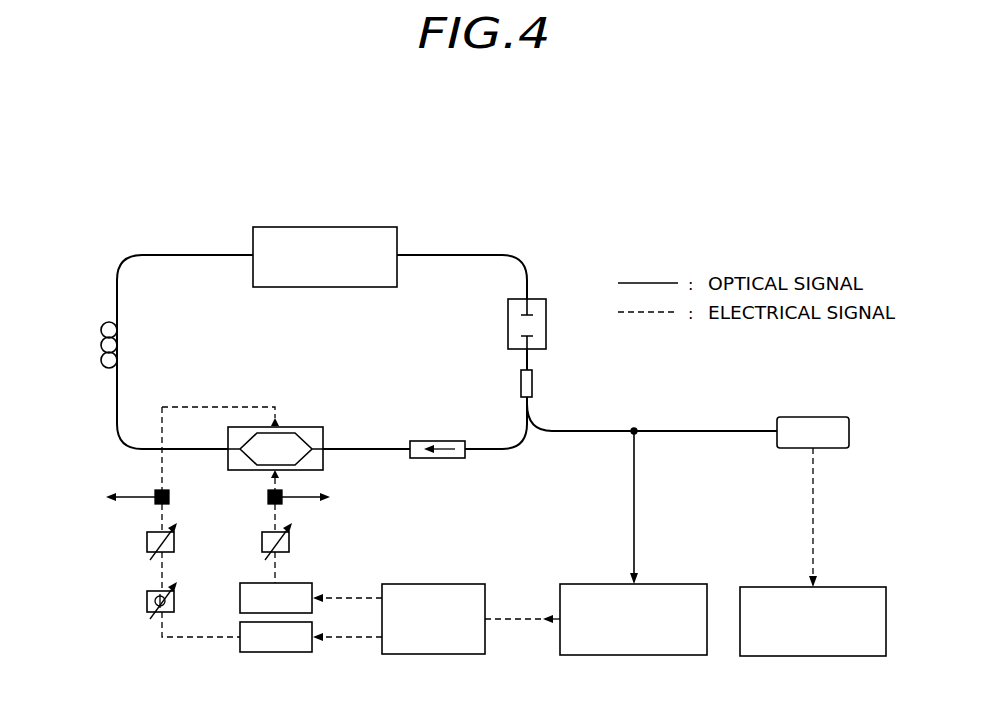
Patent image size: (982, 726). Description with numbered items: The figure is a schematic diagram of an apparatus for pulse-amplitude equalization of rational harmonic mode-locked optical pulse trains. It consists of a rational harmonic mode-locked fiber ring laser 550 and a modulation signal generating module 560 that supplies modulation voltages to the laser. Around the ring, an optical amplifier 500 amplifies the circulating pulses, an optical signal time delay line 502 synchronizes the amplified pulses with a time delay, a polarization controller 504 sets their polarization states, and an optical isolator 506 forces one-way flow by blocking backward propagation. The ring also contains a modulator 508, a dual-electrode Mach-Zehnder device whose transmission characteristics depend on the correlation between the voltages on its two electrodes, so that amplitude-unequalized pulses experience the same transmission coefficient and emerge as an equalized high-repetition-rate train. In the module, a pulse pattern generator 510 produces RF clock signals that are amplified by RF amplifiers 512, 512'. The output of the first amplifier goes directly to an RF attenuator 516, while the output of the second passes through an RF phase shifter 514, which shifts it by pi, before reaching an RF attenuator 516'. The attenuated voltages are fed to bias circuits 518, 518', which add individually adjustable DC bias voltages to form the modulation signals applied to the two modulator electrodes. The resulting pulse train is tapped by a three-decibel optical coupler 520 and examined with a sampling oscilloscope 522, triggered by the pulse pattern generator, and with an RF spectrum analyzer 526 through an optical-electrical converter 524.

The optical amplifier 500 is at (373, 288).
The optical signal time delay line 502 is at (540, 298).
The polarization controller 504 is at (108, 320).
The optical isolator 506 is at (440, 440).
The modulator 508 is at (325, 432).
The pulse pattern generator 510 is at (433, 583).
The RF amplifier 512 is at (298, 575).
The RF amplifier 512' is at (311, 659).
The RF phase shifter 514 is at (147, 602).
The RF attenuator 516 is at (311, 532).
The RF attenuator 516' is at (123, 532).
The bias circuit 518 is at (284, 508).
The bias circuit 518' is at (150, 488).
The optical coupler 520 is at (533, 385).
The sampling oscilloscope 522 is at (682, 583).
The optical-electrical converter 524 is at (828, 417).
The RF spectrum analyzer 526 is at (863, 587).
The rational harmonic mode-locked fiber ring laser 550 is at (276, 198).
The modulation signal generating module 560 is at (418, 513).